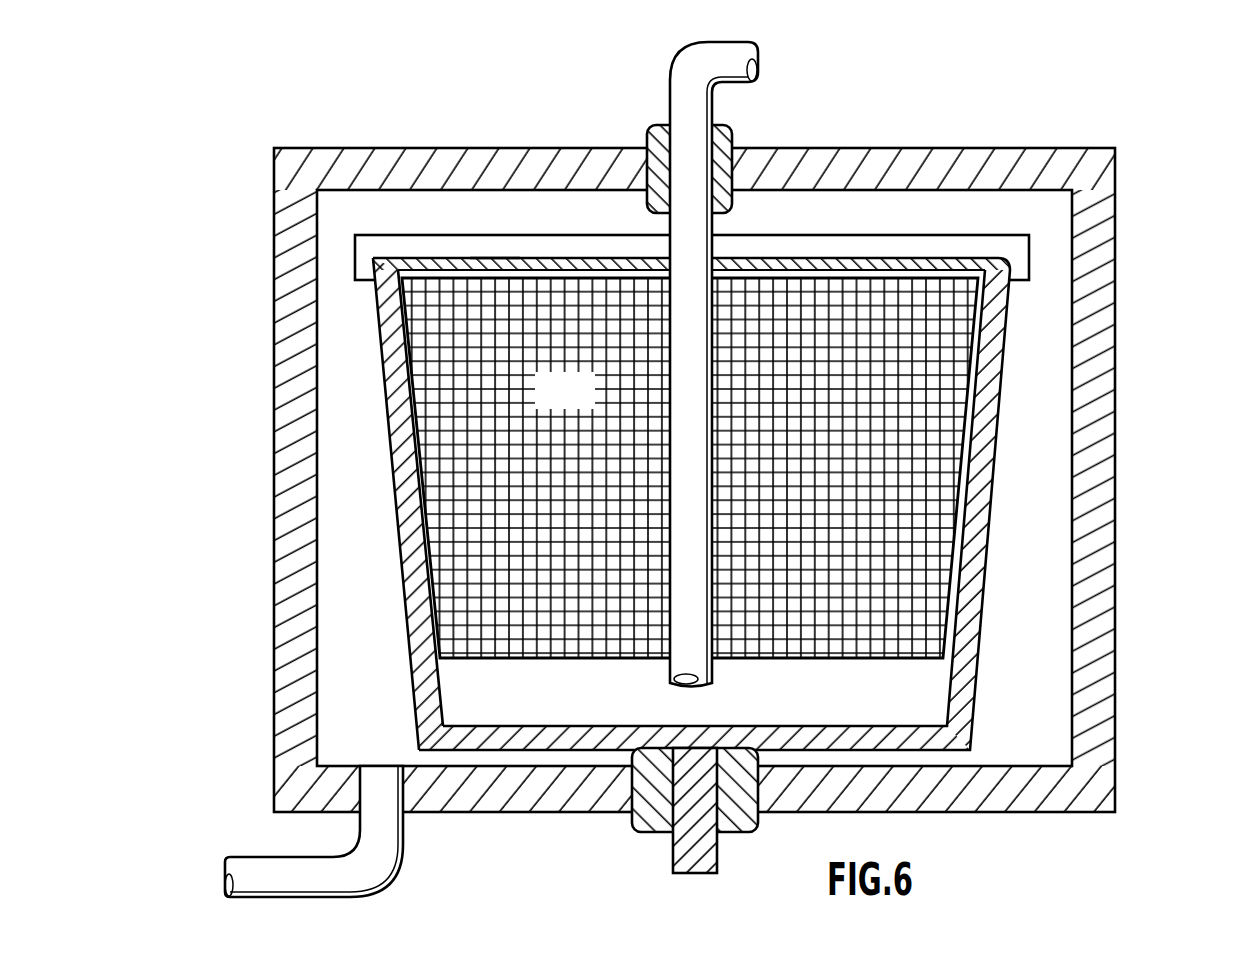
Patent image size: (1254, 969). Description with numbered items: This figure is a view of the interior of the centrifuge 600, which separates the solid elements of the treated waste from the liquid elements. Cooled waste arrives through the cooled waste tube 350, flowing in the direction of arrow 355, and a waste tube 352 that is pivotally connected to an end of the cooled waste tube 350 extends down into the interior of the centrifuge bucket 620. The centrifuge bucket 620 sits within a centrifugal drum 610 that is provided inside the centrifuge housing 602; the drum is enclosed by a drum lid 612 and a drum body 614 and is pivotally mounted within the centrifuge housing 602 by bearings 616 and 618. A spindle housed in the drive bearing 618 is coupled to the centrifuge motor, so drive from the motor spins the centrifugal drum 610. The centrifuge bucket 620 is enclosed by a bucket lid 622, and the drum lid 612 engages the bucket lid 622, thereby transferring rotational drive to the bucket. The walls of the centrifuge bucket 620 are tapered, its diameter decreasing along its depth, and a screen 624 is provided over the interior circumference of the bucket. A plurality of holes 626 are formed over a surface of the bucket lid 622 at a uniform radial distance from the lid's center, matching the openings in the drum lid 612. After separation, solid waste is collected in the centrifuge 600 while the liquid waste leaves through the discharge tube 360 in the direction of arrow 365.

The centrifuge 600 is at (696, 463).
The centrifuge housing 602 is at (1118, 412).
The centrifugal drum 610 is at (668, 475).
The drum lid 612 is at (355, 257).
The drum body 614 is at (383, 412).
The bearing 616 is at (732, 130).
The drive bearing 618 is at (758, 825).
The centrifuge bucket 620 is at (945, 707).
The bucket lid 622 is at (607, 262).
The screen 624 is at (583, 405).
The holes 626 is at (495, 262).
The cooled waste tube 350 is at (729, 362).
The waste tube 352 is at (712, 672).
The arrow 355 is at (847, 62).
The discharge tube 360 is at (317, 831).
The arrow 365 is at (220, 876).